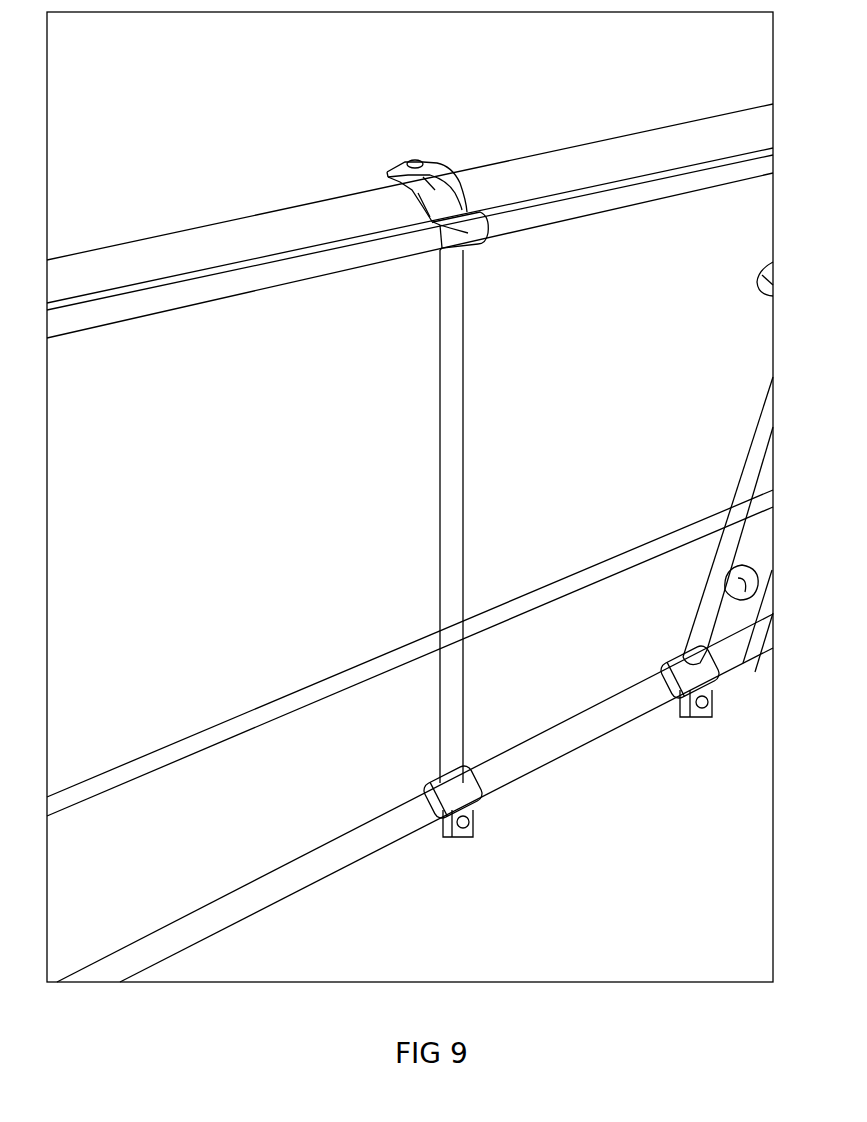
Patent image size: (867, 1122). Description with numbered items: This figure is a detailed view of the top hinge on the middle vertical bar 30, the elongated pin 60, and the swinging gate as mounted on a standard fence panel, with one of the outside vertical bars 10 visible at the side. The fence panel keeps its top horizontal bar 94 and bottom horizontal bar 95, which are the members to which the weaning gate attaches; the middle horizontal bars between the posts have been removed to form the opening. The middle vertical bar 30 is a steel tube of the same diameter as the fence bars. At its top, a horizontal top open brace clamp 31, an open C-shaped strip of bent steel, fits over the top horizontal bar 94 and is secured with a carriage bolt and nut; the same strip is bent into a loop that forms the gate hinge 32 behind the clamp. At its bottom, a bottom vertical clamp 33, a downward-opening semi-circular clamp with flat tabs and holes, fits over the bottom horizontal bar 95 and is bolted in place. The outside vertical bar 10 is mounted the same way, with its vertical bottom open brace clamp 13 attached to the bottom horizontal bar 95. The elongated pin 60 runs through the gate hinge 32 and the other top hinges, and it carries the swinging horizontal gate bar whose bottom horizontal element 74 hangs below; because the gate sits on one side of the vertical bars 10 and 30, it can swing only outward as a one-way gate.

The outside vertical bar 10 is at (745, 460).
The vertical bottom open brace clamp 13 is at (694, 712).
The middle vertical bar 30 is at (452, 372).
The horizontal top open brace clamp 31 is at (410, 162).
The gate hinge 32 is at (427, 217).
The bottom vertical clamp 33 is at (446, 800).
The elongated hinge pin 60 is at (566, 206).
The bottom horizontal element 74 is at (340, 685).
The top horizontal bar 94 is at (98, 277).
The bottom horizontal bar 95 is at (275, 890).